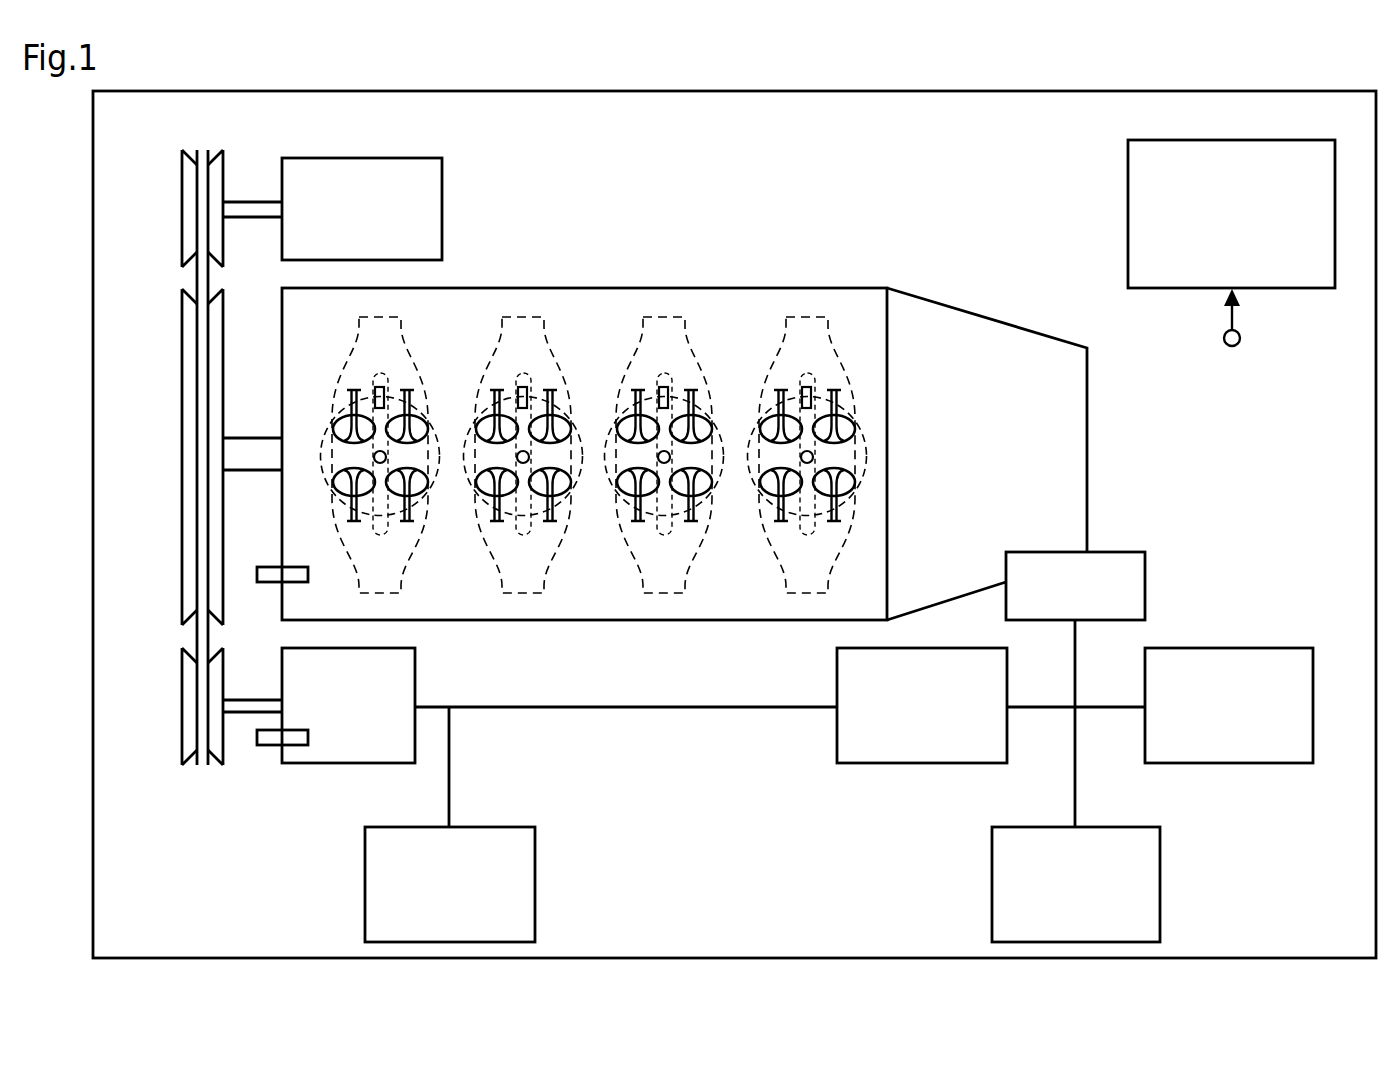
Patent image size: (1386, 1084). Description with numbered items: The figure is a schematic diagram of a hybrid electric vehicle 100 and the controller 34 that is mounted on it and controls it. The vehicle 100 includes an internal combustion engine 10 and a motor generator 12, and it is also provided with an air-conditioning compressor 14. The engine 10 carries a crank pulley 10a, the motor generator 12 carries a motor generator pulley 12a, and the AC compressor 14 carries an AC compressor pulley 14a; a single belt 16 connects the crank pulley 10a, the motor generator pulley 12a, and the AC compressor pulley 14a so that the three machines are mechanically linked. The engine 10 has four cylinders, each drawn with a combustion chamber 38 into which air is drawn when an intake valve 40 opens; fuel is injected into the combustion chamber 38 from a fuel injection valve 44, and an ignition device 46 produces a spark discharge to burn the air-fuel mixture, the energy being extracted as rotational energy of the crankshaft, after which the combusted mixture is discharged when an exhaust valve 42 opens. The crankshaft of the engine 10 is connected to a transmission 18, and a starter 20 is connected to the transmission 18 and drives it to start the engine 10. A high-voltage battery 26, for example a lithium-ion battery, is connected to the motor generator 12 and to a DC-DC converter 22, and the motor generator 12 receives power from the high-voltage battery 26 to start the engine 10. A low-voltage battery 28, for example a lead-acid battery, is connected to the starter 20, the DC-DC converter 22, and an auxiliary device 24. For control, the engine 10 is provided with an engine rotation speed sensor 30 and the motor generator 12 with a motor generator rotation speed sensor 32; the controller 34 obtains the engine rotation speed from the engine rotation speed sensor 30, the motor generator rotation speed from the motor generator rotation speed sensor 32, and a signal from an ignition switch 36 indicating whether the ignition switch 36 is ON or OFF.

The hybrid electric vehicle 100 is at (1145, 90).
The internal combustion engine 10 is at (555, 426).
The crank pulley 10a is at (182, 556).
The motor generator 12 is at (370, 764).
The motor generator pulley 12a is at (182, 726).
The air-conditioning compressor 14 is at (410, 158).
The AC compressor pulley 14a is at (182, 231).
The belt 16 is at (205, 150).
The transmission 18 is at (980, 316).
The starter 20 is at (1108, 552).
The DC-DC converter 22 is at (963, 763).
The auxiliary device 24 is at (1125, 827).
The high-voltage battery 26 is at (497, 827).
The low-voltage battery 28 is at (1265, 648).
The engine rotation speed sensor 30 is at (272, 583).
The motor generator rotation speed sensor 32 is at (272, 746).
The controller 34 is at (1278, 140).
The ignition switch 36 is at (1241, 338).
The combustion chamber 38 is at (330, 477).
The intake valve 40 is at (352, 396).
The exhaust valve 42 is at (405, 513).
The fuel injection valve 44 is at (383, 387).
The ignition device 46 is at (388, 457).